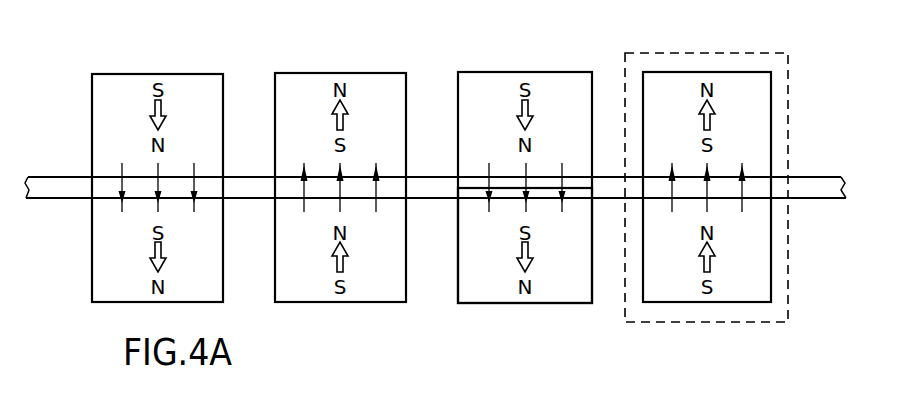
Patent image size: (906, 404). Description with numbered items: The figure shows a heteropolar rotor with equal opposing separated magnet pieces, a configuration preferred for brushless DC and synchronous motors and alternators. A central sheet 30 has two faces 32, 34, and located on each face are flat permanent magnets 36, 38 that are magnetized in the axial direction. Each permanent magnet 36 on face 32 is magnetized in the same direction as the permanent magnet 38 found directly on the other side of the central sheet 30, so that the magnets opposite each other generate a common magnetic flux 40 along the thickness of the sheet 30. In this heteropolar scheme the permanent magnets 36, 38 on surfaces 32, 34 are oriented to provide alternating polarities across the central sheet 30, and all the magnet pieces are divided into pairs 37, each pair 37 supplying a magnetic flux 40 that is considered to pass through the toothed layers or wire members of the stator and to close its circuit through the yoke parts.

The central sheet 30 is at (433, 184).
The face 32 is at (815, 175).
The face 34 is at (810, 201).
The permanent magnet 36 is at (557, 70).
The pair 37 is at (675, 53).
The permanent magnet 38 is at (550, 303).
The magnetic flux 40 is at (490, 188).